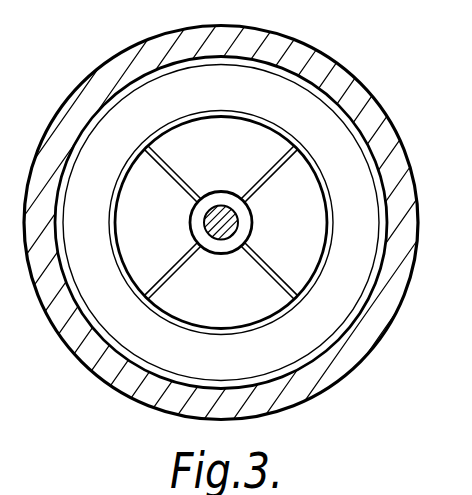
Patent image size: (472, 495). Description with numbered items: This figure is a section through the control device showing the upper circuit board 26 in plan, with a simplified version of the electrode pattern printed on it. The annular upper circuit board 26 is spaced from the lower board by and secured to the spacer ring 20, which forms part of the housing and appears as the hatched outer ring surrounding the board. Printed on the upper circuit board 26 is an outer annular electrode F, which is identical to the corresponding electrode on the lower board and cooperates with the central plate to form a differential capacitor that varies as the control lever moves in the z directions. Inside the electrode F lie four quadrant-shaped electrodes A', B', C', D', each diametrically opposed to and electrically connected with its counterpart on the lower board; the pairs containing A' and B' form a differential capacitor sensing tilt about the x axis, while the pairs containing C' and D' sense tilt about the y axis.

The spacer ring 20 is at (99, 80).
The electrode F is at (307, 118).
The upper circuit board 26 is at (126, 314).
The quadrant-shaped electrode A' is at (295, 227).
The quadrant-shaped electrode B' is at (150, 227).
The quadrant-shaped electrode C' is at (224, 150).
The quadrant-shaped electrode D' is at (225, 292).